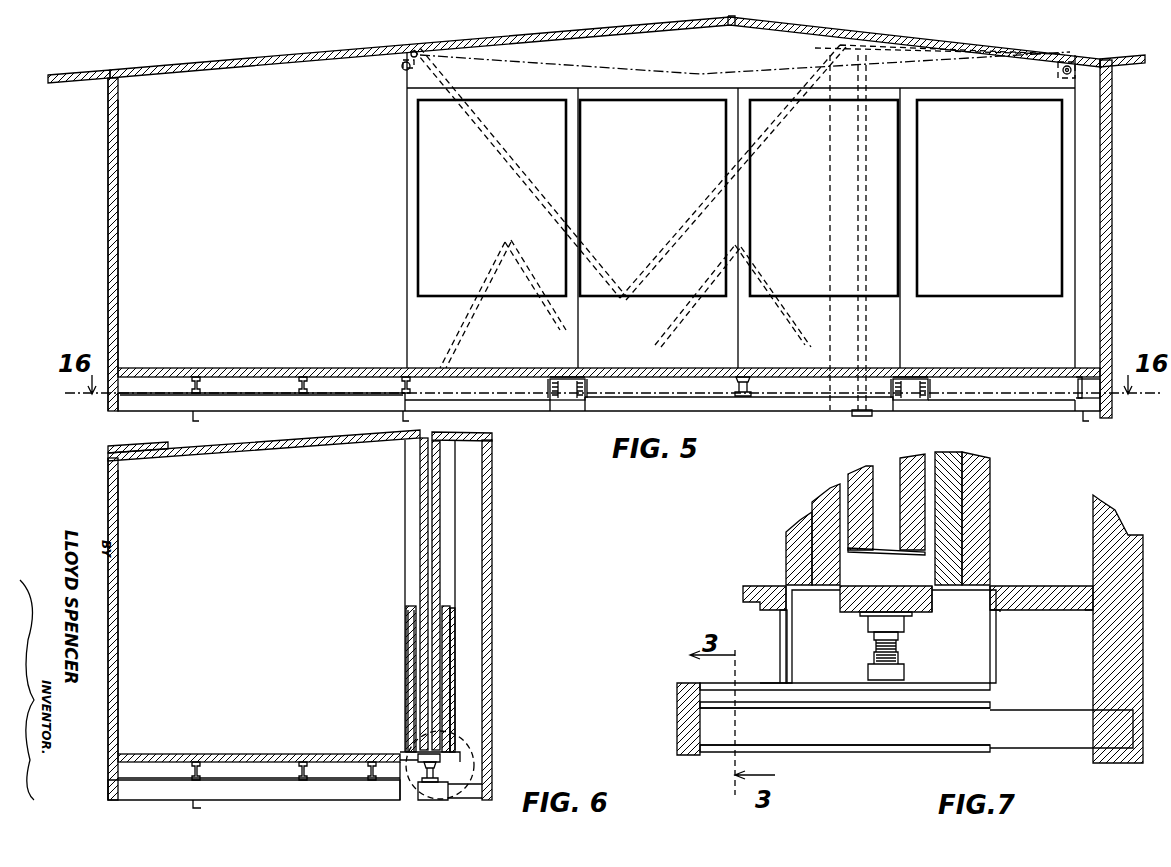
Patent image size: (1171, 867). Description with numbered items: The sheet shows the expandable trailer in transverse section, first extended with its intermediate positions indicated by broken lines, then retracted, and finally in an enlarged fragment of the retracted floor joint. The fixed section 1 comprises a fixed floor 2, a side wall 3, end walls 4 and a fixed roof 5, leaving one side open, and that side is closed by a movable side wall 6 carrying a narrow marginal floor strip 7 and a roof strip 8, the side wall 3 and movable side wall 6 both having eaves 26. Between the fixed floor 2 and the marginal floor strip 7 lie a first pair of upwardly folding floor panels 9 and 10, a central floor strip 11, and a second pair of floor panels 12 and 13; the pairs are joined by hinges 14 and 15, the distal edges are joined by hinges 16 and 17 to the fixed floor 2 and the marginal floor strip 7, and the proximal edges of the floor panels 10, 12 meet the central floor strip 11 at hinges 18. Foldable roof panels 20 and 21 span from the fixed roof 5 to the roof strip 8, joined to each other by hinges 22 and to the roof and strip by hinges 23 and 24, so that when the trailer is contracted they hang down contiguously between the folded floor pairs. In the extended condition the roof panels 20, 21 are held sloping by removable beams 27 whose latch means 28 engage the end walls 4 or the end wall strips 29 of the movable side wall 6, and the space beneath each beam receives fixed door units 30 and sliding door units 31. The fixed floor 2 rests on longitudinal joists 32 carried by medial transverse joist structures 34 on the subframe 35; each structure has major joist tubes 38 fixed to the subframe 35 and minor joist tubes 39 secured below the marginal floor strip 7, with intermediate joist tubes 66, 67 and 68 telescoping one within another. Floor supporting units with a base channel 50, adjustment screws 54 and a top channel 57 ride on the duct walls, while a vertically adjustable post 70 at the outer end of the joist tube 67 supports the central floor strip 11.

In FIG. 5, the fixed section 1 is at (156, 244).
In FIG. 6, the fixed section 1 is at (128, 482).
In FIG. 5, the fixed floor 2 is at (188, 368).
In FIG. 6, the fixed floor 2 is at (176, 762).
In FIG. 7, the fixed floor 2 is at (752, 586).
In FIG. 5, the side wall 3 is at (120, 222).
In FIG. 6, the side wall 3 is at (120, 556).
In FIG. 5, the end walls 4 is at (124, 170).
In FIG. 6, the end walls 4 is at (124, 504).
In FIG. 5, the fixed roof 5 is at (232, 72).
In FIG. 6, the fixed roof 5 is at (206, 462).
In FIG. 5, the movable side wall 6 is at (1112, 212).
In FIG. 6, the movable side wall 6 is at (490, 660).
In FIG. 7, the movable side wall 6 is at (1108, 522).
In FIG. 5, the marginal floor strip 7 is at (1092, 365).
In FIG. 6, the marginal floor strip 7 is at (492, 748).
In FIG. 7, the marginal floor strip 7 is at (1046, 586).
In FIG. 5, the roof strip 8 is at (843, 38).
In FIG. 6, the roof strip 8 is at (486, 448).
In FIG. 5, the floor panel 9 is at (440, 360).
In FIG. 6, the floor panel 9 is at (406, 620).
In FIG. 7, the floor panel 9 is at (798, 526).
In FIG. 5, the floor panel 10 is at (560, 352).
In FIG. 6, the floor panel 10 is at (414, 632).
In FIG. 7, the floor panel 10 is at (826, 492).
In FIG. 5, the central floor strip 11 is at (736, 370).
In FIG. 6, the central floor strip 11 is at (428, 752).
In FIG. 7, the central floor strip 11 is at (868, 618).
In FIG. 5, the floor panel 12 is at (674, 326).
In FIG. 6, the floor panel 12 is at (452, 614).
In FIG. 7, the floor panel 12 is at (946, 450).
In FIG. 5, the floor panel 13 is at (770, 284).
In FIG. 6, the floor panel 13 is at (454, 632).
In FIG. 7, the floor panel 13 is at (980, 456).
In FIG. 6, the hinge 14 is at (406, 592).
In FIG. 6, the hinge 15 is at (452, 592).
In FIG. 7, the hinge 16 is at (790, 598).
In FIG. 7, the hinge 17 is at (998, 584).
In FIG. 7, the hinges 18 is at (838, 612).
In FIG. 5, the roof panel 20 is at (530, 172).
In FIG. 6, the roof panel 20 is at (418, 504).
In FIG. 7, the roof panel 20 is at (860, 472).
In FIG. 5, the roof panel 21 is at (688, 212).
In FIG. 6, the roof panel 21 is at (442, 508).
In FIG. 7, the roof panel 21 is at (908, 456).
In FIG. 5, the hinges 22 is at (726, 22).
In FIG. 7, the hinges 22 is at (872, 552).
In FIG. 5, the hinge 23 is at (412, 50).
In FIG. 6, the hinge 23 is at (418, 444).
In FIG. 5, the hinge 24 is at (1060, 64).
In FIG. 6, the hinge 24 is at (442, 446).
In FIG. 5, the eaves 26 is at (100, 72).
In FIG. 6, the eaves 26 is at (166, 448).
In FIG. 5, the removable beams 27 is at (530, 92).
In FIG. 5, the latch means 28 is at (402, 72).
In FIG. 5, the end wall strips 29 is at (1092, 124).
In FIG. 5, the fixed door units 30 is at (740, 198).
In FIG. 5, the sliding door units 31 is at (739, 198).
In FIG. 5, the longitudinal joists 32 is at (206, 378).
In FIG. 6, the longitudinal joists 32 is at (204, 762).
In FIG. 7, the longitudinal joists 32 is at (780, 636).
In FIG. 5, the medial transverse joist structures 34 is at (264, 411).
In FIG. 5, the subframe 35 is at (199, 419).
In FIG. 6, the subframe 35 is at (202, 806).
In FIG. 5, the major joist tubes 38 is at (322, 410).
In FIG. 6, the major joist tubes 38 is at (318, 786).
In FIG. 7, the major joist tubes 38 is at (680, 682).
In FIG. 5, the minor joist tubes 39 is at (1034, 408).
In FIG. 6, the minor joist tubes 39 is at (486, 798).
In FIG. 7, the minor joist tubes 39 is at (1050, 716).
In FIG. 5, the base channel 50 is at (562, 404).
In FIG. 6, the adjustment screws 54 is at (244, 776).
In FIG. 5, the top channel 57 is at (552, 380).
In FIG. 5, the intermediate joist tube 66 is at (520, 408).
In FIG. 7, the intermediate joist tube 66 is at (830, 756).
In FIG. 5, the intermediate joist tube 67 is at (644, 406).
In FIG. 6, the intermediate joist tube 67 is at (434, 796).
In FIG. 7, the intermediate joist tube 67 is at (896, 756).
In FIG. 5, the intermediate joist tube 68 is at (816, 406).
In FIG. 7, the intermediate joist tube 68 is at (942, 754).
In FIG. 5, the vertically adjustable post 70 is at (750, 374).
In FIG. 6, the vertically adjustable post 70 is at (424, 766).
In FIG. 7, the vertically adjustable post 70 is at (876, 650).